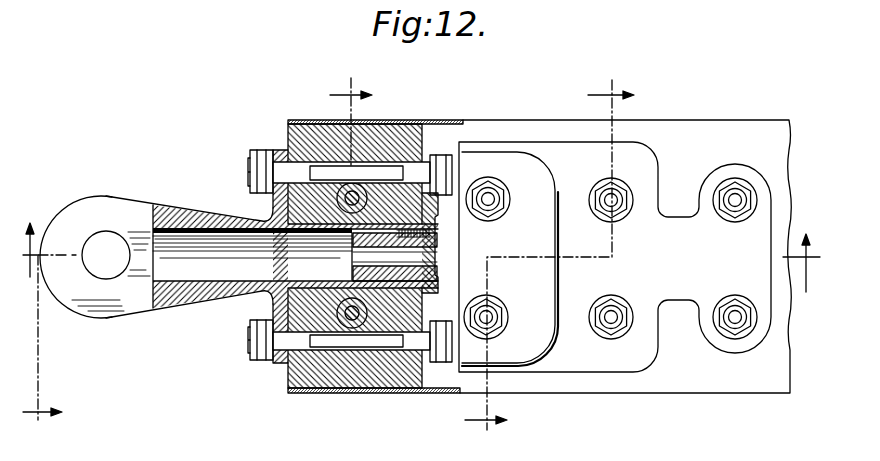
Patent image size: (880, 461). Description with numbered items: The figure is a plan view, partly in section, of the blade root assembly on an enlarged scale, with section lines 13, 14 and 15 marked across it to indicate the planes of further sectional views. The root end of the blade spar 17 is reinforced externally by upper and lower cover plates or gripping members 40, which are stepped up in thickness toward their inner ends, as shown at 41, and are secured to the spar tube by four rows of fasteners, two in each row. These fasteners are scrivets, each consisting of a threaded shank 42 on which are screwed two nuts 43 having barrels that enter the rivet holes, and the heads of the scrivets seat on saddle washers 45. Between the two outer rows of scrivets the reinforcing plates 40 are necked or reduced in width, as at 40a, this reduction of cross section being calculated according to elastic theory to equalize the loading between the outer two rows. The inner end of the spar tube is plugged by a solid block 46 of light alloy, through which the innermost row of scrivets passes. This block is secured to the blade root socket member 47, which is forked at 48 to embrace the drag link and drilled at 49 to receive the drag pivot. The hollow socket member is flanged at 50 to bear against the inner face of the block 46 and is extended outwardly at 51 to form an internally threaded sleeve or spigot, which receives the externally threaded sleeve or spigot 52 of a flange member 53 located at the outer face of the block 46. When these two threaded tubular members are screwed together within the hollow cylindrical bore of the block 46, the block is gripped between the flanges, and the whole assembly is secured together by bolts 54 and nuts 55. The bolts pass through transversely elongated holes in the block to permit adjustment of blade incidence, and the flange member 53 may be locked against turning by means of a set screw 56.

The section line 13 is at (421, 264).
The section line 14 is at (197, 262).
The section line 15 is at (547, 259).
The blade spar 17 is at (689, 121).
The cover plates or gripping members 40 is at (643, 170).
The necked portion of reinforcing plates 40a is at (680, 292).
The stepped portion of cover plates 41 is at (510, 158).
The threaded shank 42 is at (733, 203).
The nuts 43 is at (603, 189).
The saddle washers 45 is at (507, 198).
The solid block 46 is at (302, 125).
The blade root socket member 47 is at (193, 296).
The fork of socket member 48 is at (100, 301).
The drilled hole for drag pivot 49 is at (104, 232).
The flange of socket member 50 is at (280, 363).
The internally threaded sleeve or spigot 51 is at (330, 283).
The externally threaded sleeve or spigot 52 is at (403, 268).
The flange member 53 is at (433, 292).
The bolts 54 is at (380, 172).
The nuts 55 is at (252, 164).
The set screw 56 is at (430, 232).